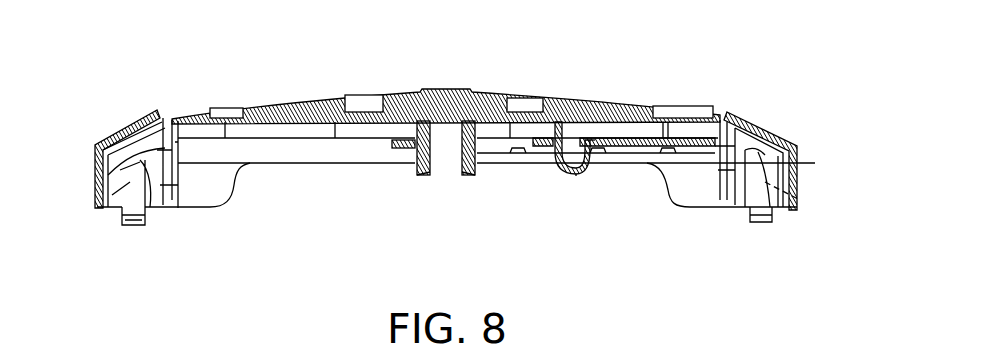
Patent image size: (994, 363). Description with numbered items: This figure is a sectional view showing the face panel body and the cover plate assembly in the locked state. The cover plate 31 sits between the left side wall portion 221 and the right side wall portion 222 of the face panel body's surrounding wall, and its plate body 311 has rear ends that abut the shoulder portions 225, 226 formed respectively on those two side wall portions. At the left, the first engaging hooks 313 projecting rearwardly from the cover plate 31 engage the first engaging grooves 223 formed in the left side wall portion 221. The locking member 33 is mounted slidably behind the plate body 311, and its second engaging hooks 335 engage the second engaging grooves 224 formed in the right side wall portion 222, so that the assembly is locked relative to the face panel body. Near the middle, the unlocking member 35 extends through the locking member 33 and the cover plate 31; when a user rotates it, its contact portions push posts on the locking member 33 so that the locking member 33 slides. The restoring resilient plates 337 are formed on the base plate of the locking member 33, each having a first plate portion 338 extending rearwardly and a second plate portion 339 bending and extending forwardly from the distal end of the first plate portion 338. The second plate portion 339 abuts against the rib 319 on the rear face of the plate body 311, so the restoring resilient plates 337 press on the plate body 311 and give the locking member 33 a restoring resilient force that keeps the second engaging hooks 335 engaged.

The cover plate 31 is at (280, 96).
The plate body 311 is at (318, 98).
The unlocking member 35 is at (433, 82).
The rib 319 is at (553, 133).
The left side wall portion 221 is at (165, 135).
The shoulder portion 225 is at (105, 155).
The first engaging grooves 223 is at (107, 177).
The first engaging hooks 313 is at (172, 145).
The right side wall portion 222 is at (727, 133).
The shoulder portion 226 is at (747, 165).
The second engaging grooves 224 is at (812, 200).
The second plate portion 339 is at (565, 148).
The first plate portion 338 is at (585, 165).
The restoring resilient plates 337 is at (572, 180).
The locking member 33 is at (672, 174).
The second engaging hooks 335 is at (720, 172).